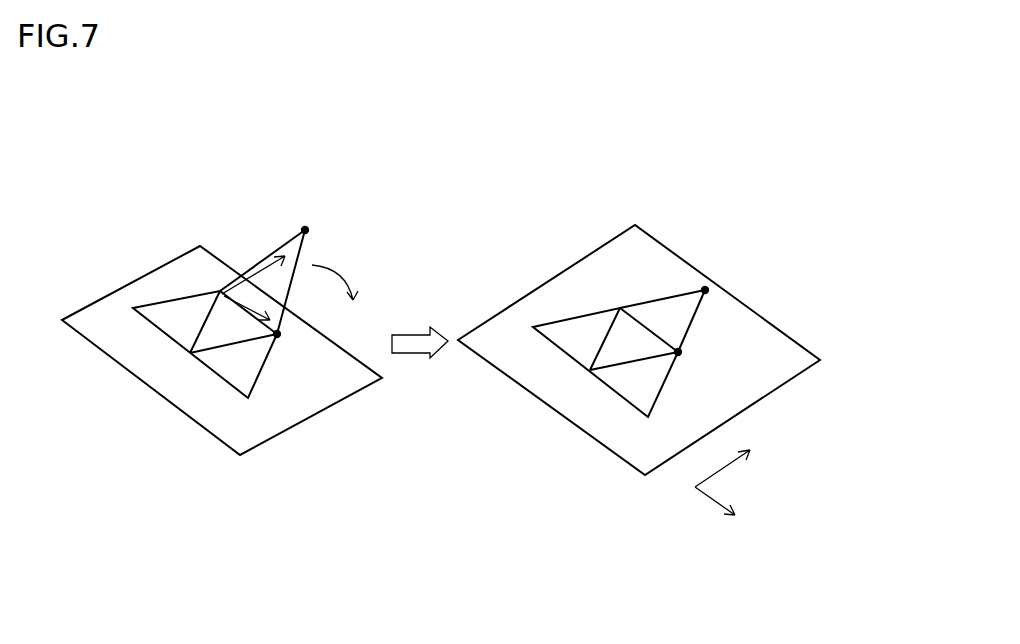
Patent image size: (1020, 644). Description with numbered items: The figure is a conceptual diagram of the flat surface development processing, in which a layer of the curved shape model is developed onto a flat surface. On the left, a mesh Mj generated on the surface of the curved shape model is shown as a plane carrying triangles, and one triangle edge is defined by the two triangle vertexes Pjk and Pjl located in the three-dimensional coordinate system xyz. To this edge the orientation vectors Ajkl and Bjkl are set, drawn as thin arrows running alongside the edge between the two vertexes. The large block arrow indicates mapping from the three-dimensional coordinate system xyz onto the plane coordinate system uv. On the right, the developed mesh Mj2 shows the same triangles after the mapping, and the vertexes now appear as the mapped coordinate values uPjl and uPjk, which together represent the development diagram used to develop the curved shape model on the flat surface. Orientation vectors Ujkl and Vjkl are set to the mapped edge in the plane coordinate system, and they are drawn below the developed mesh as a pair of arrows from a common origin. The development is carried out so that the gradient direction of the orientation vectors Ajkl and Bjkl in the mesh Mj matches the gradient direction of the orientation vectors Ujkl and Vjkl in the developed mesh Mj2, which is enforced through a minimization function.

The mesh Mj is at (157, 393).
The mesh developed on the flat surface Mj2 is at (560, 414).
The triangle vertex Pjl is at (324, 221).
The triangle vertex Pjk is at (287, 360).
The orientation vector Ajkl is at (236, 284).
The orientation vector Bjkl is at (244, 300).
The mapped triangle vertex uPjl is at (819, 271).
The mapped triangle vertex uPjk is at (802, 361).
The orientation vector in the plane coordinate system Vjkl is at (742, 453).
The orientation vector in the plane coordinate system Ujkl is at (726, 523).